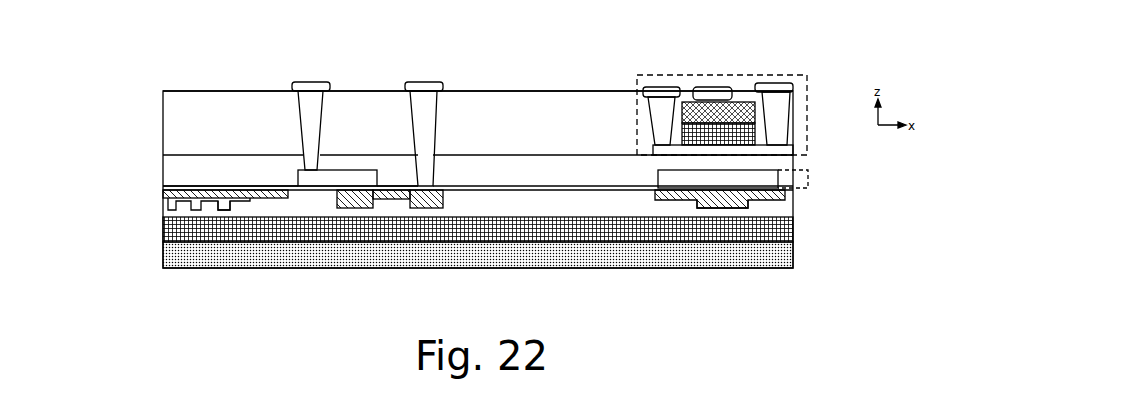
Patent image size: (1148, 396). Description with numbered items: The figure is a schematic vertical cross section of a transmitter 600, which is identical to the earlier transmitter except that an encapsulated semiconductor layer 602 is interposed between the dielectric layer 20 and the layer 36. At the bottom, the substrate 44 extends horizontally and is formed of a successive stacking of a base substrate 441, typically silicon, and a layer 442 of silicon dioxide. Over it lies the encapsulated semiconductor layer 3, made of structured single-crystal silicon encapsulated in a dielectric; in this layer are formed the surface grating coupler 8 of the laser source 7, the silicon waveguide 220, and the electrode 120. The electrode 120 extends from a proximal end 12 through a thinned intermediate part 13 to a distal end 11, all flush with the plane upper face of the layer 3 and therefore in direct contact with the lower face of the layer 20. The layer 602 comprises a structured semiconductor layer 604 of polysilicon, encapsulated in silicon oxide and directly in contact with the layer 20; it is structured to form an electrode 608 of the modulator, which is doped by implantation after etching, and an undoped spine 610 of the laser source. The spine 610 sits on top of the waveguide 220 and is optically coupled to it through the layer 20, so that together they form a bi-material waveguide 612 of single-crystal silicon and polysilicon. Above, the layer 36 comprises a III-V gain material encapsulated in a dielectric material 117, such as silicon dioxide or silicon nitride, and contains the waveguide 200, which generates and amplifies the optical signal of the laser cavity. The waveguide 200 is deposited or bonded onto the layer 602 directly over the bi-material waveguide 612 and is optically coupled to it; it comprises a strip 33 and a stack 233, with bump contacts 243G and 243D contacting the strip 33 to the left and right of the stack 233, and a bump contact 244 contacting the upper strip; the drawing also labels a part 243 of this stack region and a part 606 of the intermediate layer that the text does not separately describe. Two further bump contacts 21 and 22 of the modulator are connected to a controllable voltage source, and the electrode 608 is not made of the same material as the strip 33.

The transmitter 600 is at (142, 147).
The dielectric material 117 is at (192, 107).
The layer 36 is at (163, 92).
The bump contact 22 is at (310, 84).
The bump contact 21 is at (428, 84).
The electrode 608 is at (342, 170).
The insulating layer 606 is at (475, 177).
The encapsulated semiconductor layer 602 is at (163, 160).
The dielectric layer 20 is at (165, 187).
The encapsulated semiconductor layer 3 is at (163, 198).
The surface grating coupler 8 is at (223, 204).
The proximal end 12 is at (344, 207).
The thinned intermediate part 13 is at (393, 199).
The distal end 11 is at (432, 207).
The electrode 120 is at (305, 312).
The substrate 44 is at (100, 217).
The layer of dielectric material 442 is at (170, 231).
The base substrate 441 is at (172, 253).
The laser source 7 is at (637, 32).
The waveguide 200 is at (811, 83).
The bump contact 243G is at (662, 87).
The bump contact 244 is at (715, 87).
The bump contact 243D is at (780, 83).
The channel layer 243 is at (745, 108).
The stack 233 is at (745, 133).
The strip 33 is at (775, 151).
The structured semiconductor layer 604 is at (762, 181).
The spine 610 is at (788, 189).
The waveguide 220 is at (773, 198).
The bi-material waveguide 612 is at (868, 205).